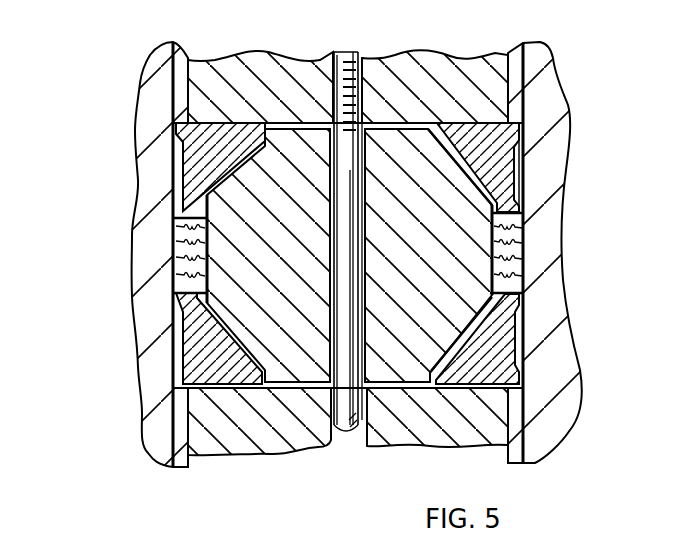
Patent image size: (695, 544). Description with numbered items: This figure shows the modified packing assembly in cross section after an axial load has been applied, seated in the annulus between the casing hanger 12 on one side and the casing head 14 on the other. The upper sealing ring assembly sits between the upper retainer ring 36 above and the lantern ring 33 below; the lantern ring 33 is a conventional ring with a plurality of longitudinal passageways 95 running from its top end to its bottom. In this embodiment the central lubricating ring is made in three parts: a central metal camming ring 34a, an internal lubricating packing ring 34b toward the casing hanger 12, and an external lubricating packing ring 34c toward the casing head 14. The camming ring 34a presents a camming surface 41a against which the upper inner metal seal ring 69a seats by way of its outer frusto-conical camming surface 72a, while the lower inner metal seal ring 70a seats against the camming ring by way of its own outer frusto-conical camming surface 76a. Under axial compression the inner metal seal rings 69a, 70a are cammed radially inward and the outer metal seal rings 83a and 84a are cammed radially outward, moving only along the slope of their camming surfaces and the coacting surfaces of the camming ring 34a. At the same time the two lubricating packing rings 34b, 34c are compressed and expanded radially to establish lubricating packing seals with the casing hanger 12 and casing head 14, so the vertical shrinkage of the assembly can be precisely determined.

The casing hanger 12 is at (148, 308).
The casing head 14 is at (557, 413).
The lantern ring 33 is at (205, 430).
The central metal camming ring 34a is at (430, 260).
The internal lubricating packing ring 34b is at (510, 250).
The external lubricating packing ring 34c is at (173, 253).
The upper retainer ring 36 is at (240, 77).
The camming surface 41a is at (500, 90).
The upper inner metal seal ring 69a is at (500, 131).
The lower inner metal seal ring 70a is at (485, 353).
The outer frusto-conical camming surface 72a is at (510, 142).
The outer frusto-conical camming surface 76a is at (478, 322).
The upper outer metal seal ring 83a is at (215, 150).
The lower outer metal seal ring 84a is at (205, 345).
The longitudinal passageways 95 is at (357, 160).